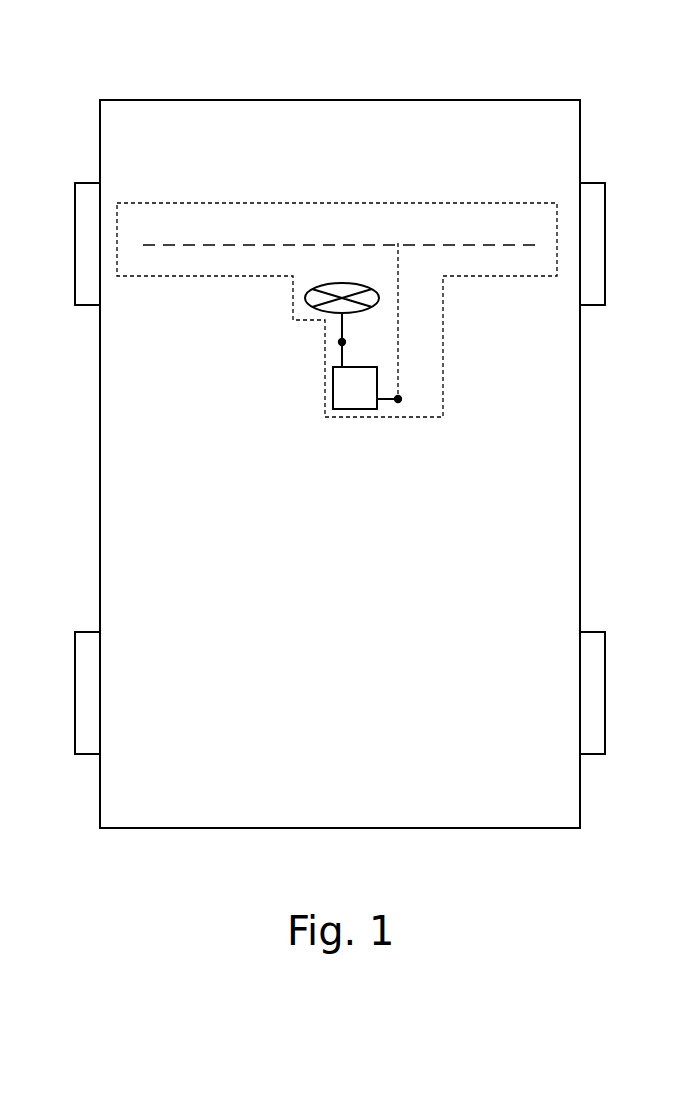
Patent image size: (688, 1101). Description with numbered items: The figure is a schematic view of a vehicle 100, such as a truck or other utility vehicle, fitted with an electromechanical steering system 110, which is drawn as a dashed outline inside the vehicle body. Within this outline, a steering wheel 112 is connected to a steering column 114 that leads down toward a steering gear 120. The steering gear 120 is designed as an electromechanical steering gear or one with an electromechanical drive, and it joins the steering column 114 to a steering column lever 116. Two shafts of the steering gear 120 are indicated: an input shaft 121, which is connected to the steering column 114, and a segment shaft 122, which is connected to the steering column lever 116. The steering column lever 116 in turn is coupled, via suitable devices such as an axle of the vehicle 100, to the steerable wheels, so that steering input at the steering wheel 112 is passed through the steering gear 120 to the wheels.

The vehicle 100 is at (130, 100).
The electromechanical steering system 110 is at (141, 202).
The steering wheel 112 is at (342, 282).
The steering column 114 is at (343, 333).
The steering column lever 116 is at (398, 399).
The steering gear 120 is at (377, 368).
The input shaft 121 is at (343, 352).
The segment shaft 122 is at (388, 405).